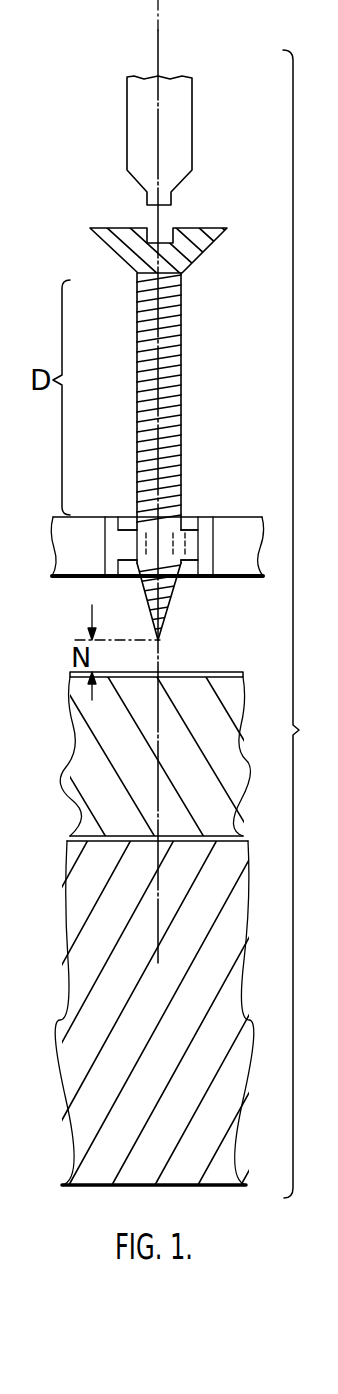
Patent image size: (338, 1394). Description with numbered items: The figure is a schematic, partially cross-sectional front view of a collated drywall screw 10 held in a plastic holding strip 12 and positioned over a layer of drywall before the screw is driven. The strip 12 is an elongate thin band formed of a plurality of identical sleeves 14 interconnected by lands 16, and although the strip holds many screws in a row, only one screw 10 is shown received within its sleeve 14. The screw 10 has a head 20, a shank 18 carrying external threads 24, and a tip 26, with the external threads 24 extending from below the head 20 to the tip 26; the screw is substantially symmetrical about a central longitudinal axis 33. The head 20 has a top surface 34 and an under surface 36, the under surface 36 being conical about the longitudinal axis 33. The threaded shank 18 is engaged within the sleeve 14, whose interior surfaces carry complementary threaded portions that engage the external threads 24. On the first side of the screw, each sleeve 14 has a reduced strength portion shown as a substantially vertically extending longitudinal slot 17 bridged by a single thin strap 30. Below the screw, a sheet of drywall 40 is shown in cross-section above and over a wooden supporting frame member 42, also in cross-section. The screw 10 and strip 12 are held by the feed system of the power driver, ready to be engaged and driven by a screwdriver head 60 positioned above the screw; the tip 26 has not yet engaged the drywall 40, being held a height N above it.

The screw 10 is at (183, 422).
The holding strip 12 is at (97, 582).
The sleeve 14 is at (241, 517).
The lands 16 is at (254, 557).
The longitudinal slot 17 is at (130, 522).
The shank 18 is at (176, 407).
The head 20 is at (203, 251).
The external threads 24 is at (181, 442).
The tip 26 is at (160, 640).
The strap 30 is at (197, 547).
The central longitudinal axis 33 is at (160, 37).
The top surface 34 is at (198, 228).
The under surface 36 is at (194, 258).
The sheet of drywall 40 is at (214, 773).
The frame member 42 is at (204, 918).
The screwdriver head 60 is at (184, 112).